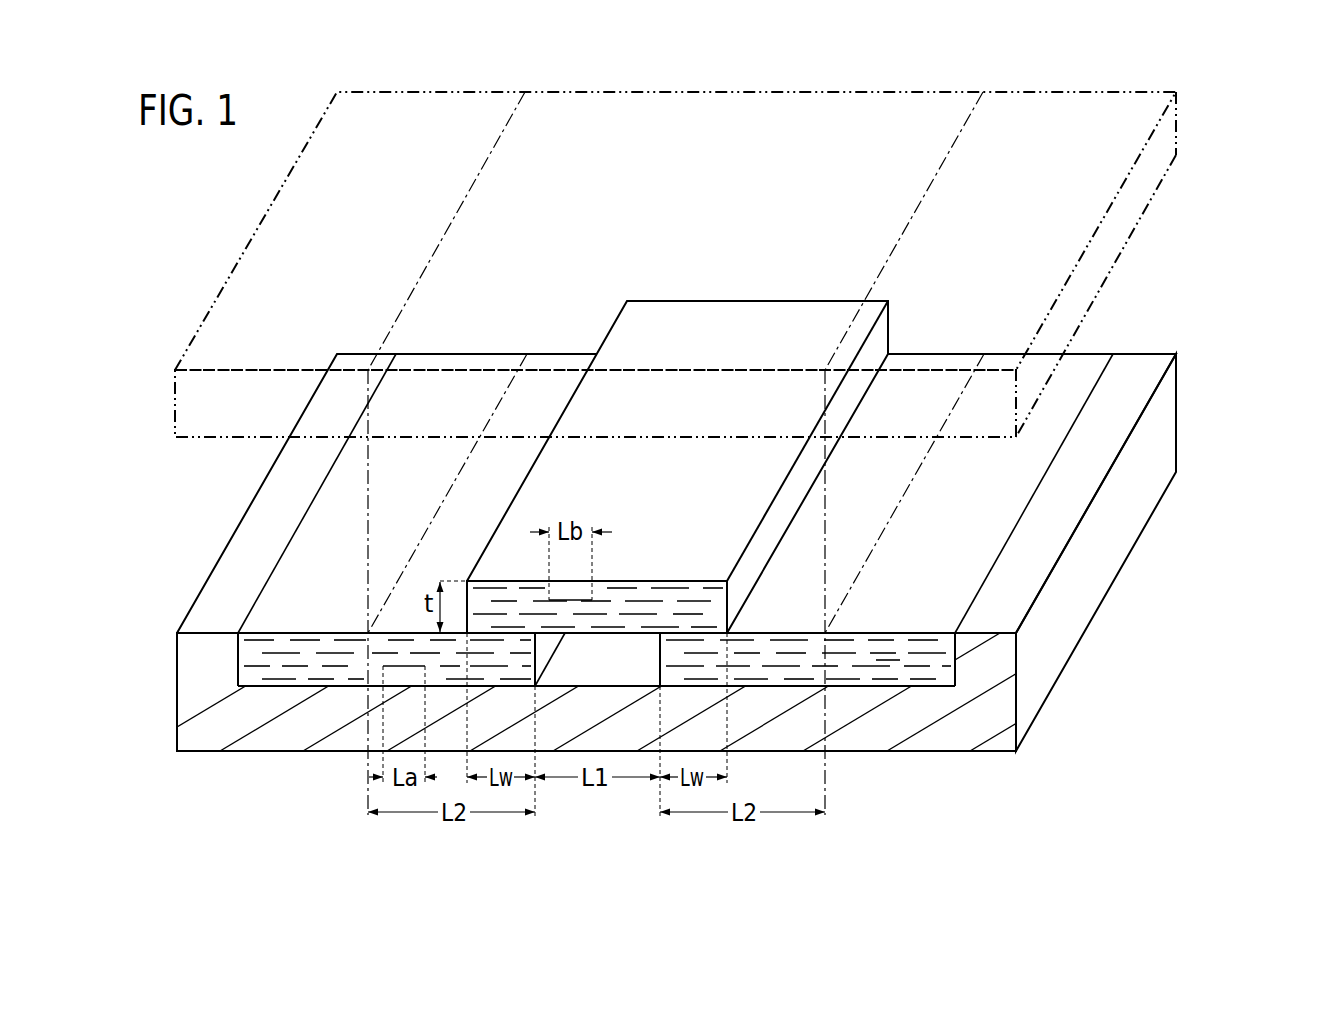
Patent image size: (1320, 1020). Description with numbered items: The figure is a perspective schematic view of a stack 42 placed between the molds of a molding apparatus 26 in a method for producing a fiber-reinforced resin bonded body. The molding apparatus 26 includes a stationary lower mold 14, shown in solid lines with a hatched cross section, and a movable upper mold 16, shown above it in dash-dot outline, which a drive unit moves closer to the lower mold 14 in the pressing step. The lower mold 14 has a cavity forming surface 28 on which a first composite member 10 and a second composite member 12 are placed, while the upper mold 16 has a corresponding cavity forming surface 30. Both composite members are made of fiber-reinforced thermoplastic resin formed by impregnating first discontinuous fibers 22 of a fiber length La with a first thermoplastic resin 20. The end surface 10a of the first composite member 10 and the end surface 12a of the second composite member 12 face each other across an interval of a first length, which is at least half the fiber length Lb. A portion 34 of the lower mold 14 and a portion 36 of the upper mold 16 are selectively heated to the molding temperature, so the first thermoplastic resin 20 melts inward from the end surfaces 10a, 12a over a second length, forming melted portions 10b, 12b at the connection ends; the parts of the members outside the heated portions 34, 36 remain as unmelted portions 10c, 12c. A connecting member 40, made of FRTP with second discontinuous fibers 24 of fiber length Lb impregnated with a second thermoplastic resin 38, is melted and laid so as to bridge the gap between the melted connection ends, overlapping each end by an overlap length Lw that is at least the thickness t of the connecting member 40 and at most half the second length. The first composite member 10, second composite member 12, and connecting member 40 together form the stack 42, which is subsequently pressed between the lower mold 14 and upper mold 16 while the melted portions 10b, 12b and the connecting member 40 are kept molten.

The first composite member 10 is at (460, 363).
The end surface of the first composite member 10a is at (547, 645).
The melted portion of the first composite member 10b is at (398, 632).
The unmelted portion of the first composite member 10c is at (310, 632).
The second composite member 12 is at (1070, 388).
The end surface of the second composite member 12a is at (658, 650).
The melted portion of the second composite member 12b is at (805, 632).
The unmelted portion of the second composite member 12c is at (935, 632).
The lower mold 14 is at (1172, 407).
The upper mold 16 is at (1170, 128).
The first thermoplastic resin 20 is at (308, 673).
The first discontinuous fiber 22 is at (278, 667).
The second discontinuous fiber 24 is at (665, 613).
The molding apparatus 26 is at (196, 176).
The cavity forming surface of the lower mold 28 is at (887, 682).
The cavity forming surface of the upper mold 30 is at (410, 440).
The portion to be heated of the lower mold 34 is at (347, 742).
The portion to be heated of the upper mold 36 is at (698, 92).
The second thermoplastic resin 38 is at (698, 590).
The connecting member 40 is at (763, 315).
The stack 42 is at (848, 488).